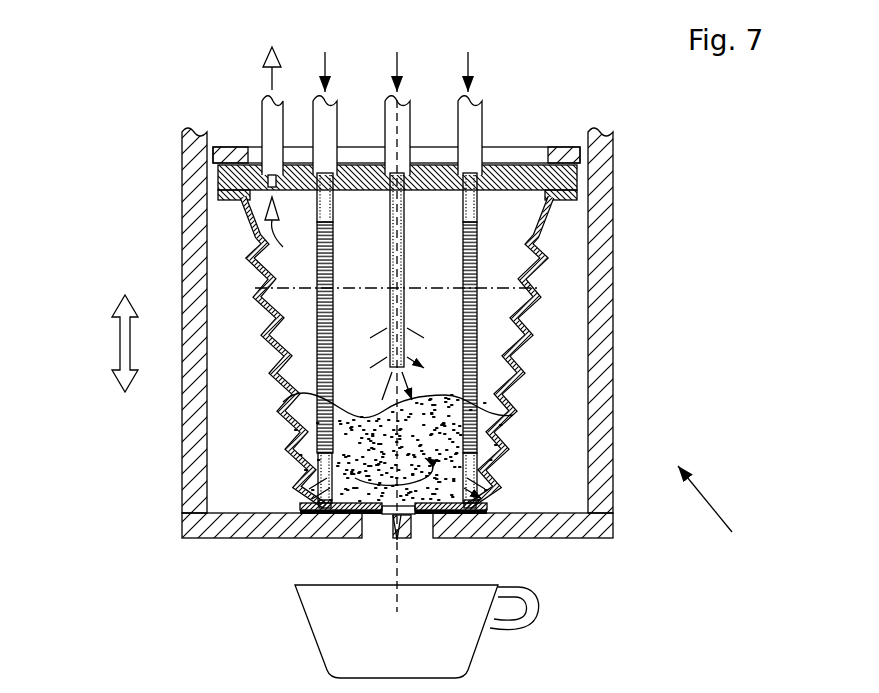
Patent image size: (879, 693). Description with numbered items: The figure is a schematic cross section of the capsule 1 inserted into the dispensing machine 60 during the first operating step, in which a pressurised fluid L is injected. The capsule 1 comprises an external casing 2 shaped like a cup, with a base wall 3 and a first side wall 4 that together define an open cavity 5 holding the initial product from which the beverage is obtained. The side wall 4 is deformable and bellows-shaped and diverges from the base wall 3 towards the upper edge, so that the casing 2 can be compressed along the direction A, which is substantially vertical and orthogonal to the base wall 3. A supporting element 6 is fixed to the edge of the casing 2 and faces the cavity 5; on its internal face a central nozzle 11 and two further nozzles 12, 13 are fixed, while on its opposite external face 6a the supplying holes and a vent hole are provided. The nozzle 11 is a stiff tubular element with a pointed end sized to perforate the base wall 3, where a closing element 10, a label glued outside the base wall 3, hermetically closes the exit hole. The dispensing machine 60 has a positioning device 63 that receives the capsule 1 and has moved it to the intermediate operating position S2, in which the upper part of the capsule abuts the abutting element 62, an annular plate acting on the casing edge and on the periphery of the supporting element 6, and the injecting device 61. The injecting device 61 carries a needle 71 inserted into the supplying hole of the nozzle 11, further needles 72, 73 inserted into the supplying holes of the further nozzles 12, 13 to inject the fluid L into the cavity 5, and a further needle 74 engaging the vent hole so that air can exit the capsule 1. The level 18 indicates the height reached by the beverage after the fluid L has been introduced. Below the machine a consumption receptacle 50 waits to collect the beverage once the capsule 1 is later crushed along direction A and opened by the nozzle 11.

The capsule 1 is at (148, 72).
The external casing 2 is at (413, 348).
The base wall 3 is at (322, 513).
The first side wall 4 is at (520, 428).
The cavity 5 is at (368, 250).
The supporting element 6 is at (466, 162).
The external face 6a is at (548, 228).
The closing element 10 is at (417, 543).
The nozzle 11 is at (317, 243).
The further nozzle 12 is at (268, 272).
The further nozzle 13 is at (520, 345).
The level 18 is at (540, 284).
The consumption receptacle 50 is at (445, 647).
The dispensing machine 60 is at (176, 585).
The injecting device 61 is at (203, 115).
The abutting element 62 is at (560, 152).
The positioning device 63 is at (598, 532).
The needle 71 is at (404, 125).
The further needle 72 is at (327, 127).
The further needle 73 is at (472, 128).
The further needle 74 is at (275, 123).
The direction A is at (118, 348).
The fluid L is at (530, 388).
The intermediate operating position S2 is at (721, 509).